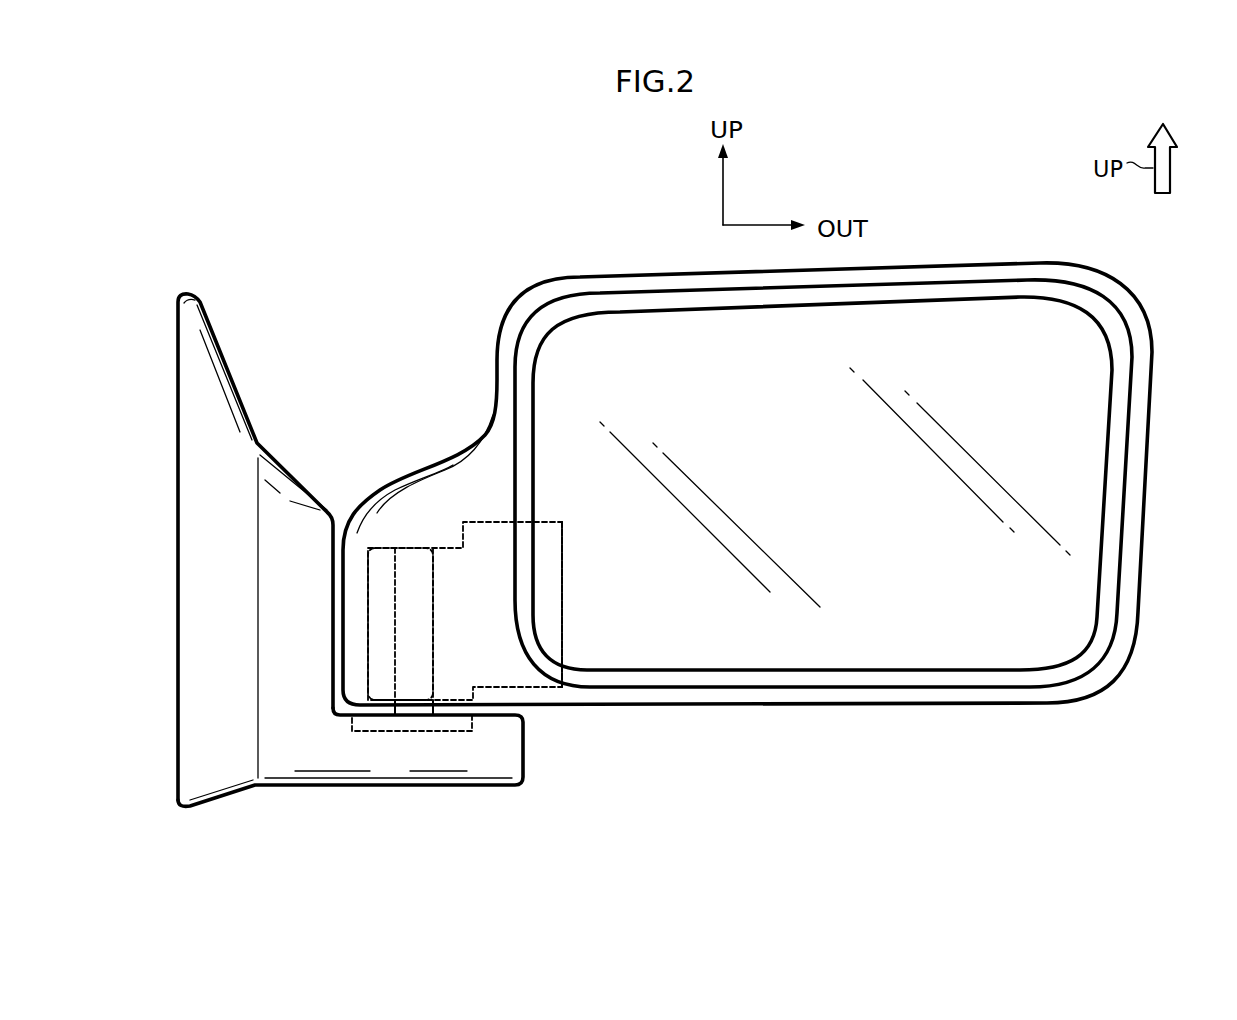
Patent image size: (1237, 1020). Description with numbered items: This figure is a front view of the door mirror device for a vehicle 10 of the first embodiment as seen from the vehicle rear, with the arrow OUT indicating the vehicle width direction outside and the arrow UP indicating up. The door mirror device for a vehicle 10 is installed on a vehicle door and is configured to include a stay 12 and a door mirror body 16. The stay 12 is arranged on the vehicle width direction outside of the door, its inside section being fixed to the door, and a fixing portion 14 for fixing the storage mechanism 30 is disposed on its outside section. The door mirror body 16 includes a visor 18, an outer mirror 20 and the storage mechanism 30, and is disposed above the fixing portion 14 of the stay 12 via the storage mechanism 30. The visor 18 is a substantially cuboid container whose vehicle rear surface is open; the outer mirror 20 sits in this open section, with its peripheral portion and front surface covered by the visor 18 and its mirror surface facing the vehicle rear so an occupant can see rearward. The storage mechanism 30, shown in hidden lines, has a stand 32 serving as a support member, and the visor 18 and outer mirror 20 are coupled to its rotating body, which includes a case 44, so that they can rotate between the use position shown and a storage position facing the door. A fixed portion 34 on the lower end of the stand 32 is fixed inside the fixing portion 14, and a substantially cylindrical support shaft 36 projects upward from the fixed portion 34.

The door mirror device for a vehicle 10 is at (379, 298).
The stay 12 is at (247, 407).
The fixing portion 14 is at (473, 787).
The door mirror body 16 is at (1139, 311).
The visor 18 is at (1145, 486).
The outer mirror 20 is at (1087, 573).
The storage mechanism 30 is at (563, 548).
The stand 32 is at (395, 620).
The fixed portion 34 is at (422, 732).
The support shaft 36 is at (435, 643).
The case 44 is at (563, 603).